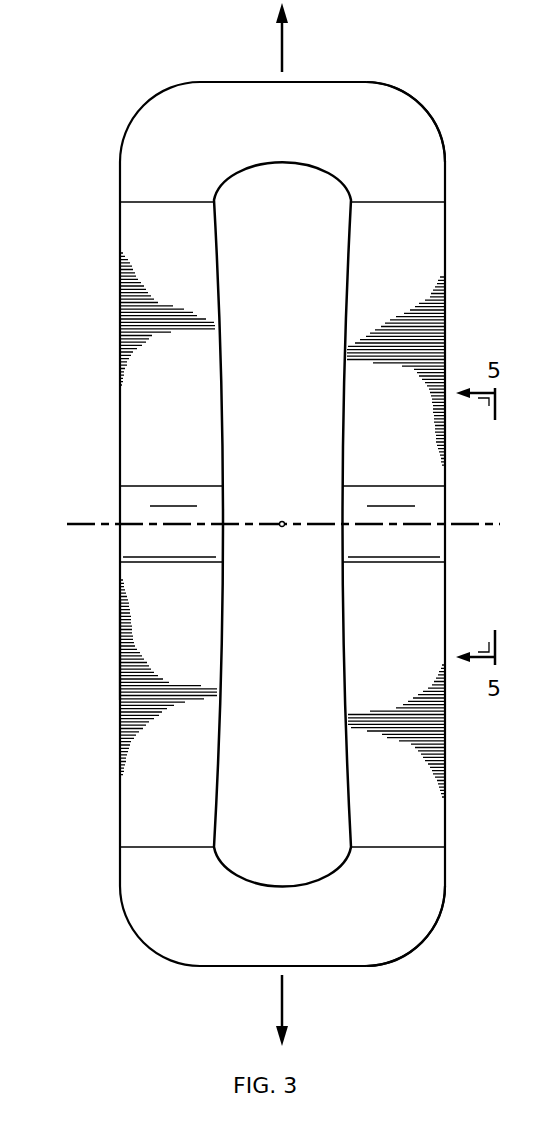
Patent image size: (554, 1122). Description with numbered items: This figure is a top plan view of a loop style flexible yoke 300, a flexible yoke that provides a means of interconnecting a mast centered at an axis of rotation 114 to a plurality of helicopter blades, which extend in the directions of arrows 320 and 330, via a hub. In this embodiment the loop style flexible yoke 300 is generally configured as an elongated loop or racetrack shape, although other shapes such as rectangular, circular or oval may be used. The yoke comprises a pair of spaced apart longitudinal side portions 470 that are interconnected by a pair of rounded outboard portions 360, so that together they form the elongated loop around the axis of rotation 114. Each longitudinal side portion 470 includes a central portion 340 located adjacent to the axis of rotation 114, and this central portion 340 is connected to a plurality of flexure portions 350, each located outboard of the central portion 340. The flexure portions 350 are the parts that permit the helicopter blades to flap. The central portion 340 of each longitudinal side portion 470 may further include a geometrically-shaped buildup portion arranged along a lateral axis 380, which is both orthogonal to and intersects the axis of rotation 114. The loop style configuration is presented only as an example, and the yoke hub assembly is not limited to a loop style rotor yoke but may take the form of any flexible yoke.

The loop style flexible yoke 300 is at (148, 57).
The arrow 320 is at (283, 45).
The arrow 330 is at (283, 1008).
The rounded outboard portions 360 is at (407, 107).
The flexure portions 350 is at (120, 308).
The central portion 340 is at (145, 461).
The longitudinal side portions 470 is at (120, 650).
The lateral axis 380 is at (481, 523).
The axis of rotation 114 is at (282, 519).